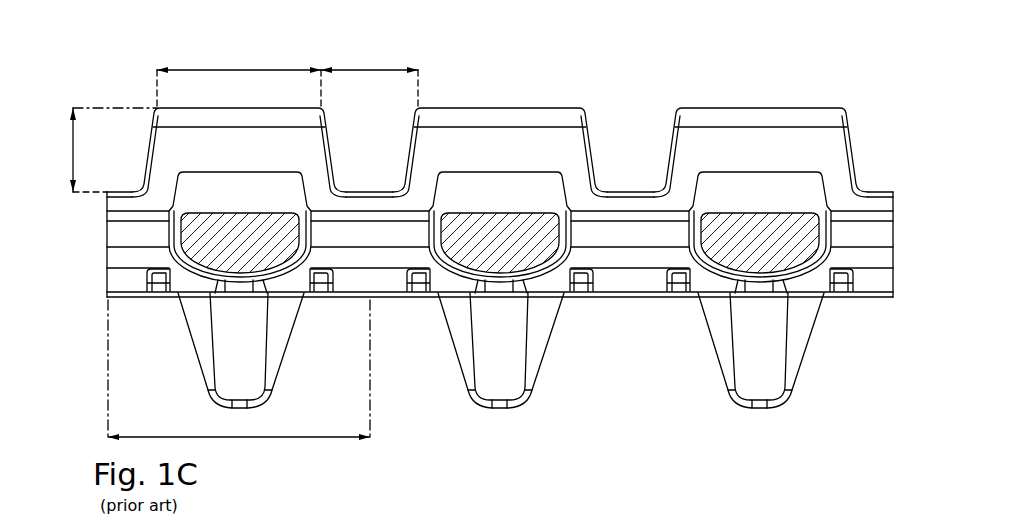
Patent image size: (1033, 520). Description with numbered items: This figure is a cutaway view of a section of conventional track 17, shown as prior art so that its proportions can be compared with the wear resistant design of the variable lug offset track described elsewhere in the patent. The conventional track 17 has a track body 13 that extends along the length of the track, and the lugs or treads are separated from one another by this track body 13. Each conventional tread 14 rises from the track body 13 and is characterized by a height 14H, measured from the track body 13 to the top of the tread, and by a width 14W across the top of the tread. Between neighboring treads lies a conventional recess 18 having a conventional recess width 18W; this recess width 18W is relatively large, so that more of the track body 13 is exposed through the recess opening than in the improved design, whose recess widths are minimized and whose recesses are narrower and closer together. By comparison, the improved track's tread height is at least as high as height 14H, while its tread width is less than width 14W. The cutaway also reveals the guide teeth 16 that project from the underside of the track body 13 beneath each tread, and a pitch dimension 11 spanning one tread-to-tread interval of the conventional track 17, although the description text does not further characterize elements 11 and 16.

The track pitch 11 is at (280, 440).
The track body 13 is at (624, 205).
The conventional tread 14 is at (248, 155).
The height of conventional tread 14H is at (72, 155).
The width of conventional tread 14W is at (253, 70).
The guide tooth 16 is at (800, 322).
The conventional track 17 is at (836, 86).
The conventional recess 18 is at (384, 155).
The conventional recess width 18W is at (381, 70).